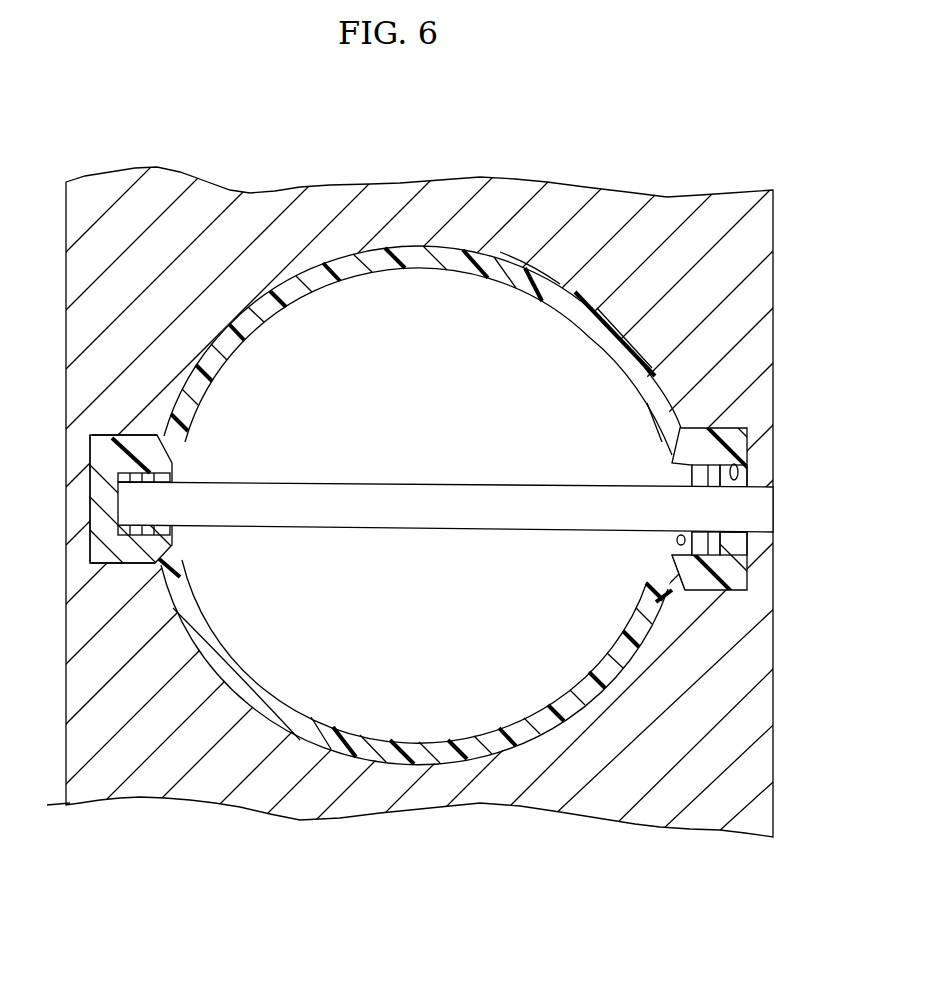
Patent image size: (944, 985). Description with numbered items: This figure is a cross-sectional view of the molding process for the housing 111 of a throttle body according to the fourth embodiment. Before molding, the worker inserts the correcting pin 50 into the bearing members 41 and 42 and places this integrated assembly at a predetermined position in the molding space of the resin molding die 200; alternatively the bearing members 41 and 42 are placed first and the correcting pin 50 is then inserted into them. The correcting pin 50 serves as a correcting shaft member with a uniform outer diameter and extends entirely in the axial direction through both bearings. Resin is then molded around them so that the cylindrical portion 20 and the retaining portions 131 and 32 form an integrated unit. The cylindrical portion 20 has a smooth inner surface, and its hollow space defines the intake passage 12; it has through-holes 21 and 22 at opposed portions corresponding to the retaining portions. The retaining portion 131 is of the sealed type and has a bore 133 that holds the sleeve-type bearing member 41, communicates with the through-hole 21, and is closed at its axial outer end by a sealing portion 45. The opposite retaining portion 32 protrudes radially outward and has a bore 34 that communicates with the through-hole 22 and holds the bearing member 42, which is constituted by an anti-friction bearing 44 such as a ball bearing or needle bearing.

The resin molding die 200 is at (303, 190).
The intake passage 12 is at (433, 248).
The housing 111 is at (528, 263).
The cylindrical portion 20 is at (590, 287).
The through-hole 21 is at (157, 575).
The through-hole 22 is at (670, 592).
The bearing member 41 is at (120, 437).
The bearing member 42 is at (727, 590).
The retaining portion 131 is at (140, 437).
The bore 133 is at (127, 565).
The sealing portion 45 is at (90, 503).
The retaining portion 32 is at (708, 428).
The bore 34 is at (735, 428).
The anti-friction bearing 44 is at (740, 480).
The correcting pin 50 is at (413, 530).